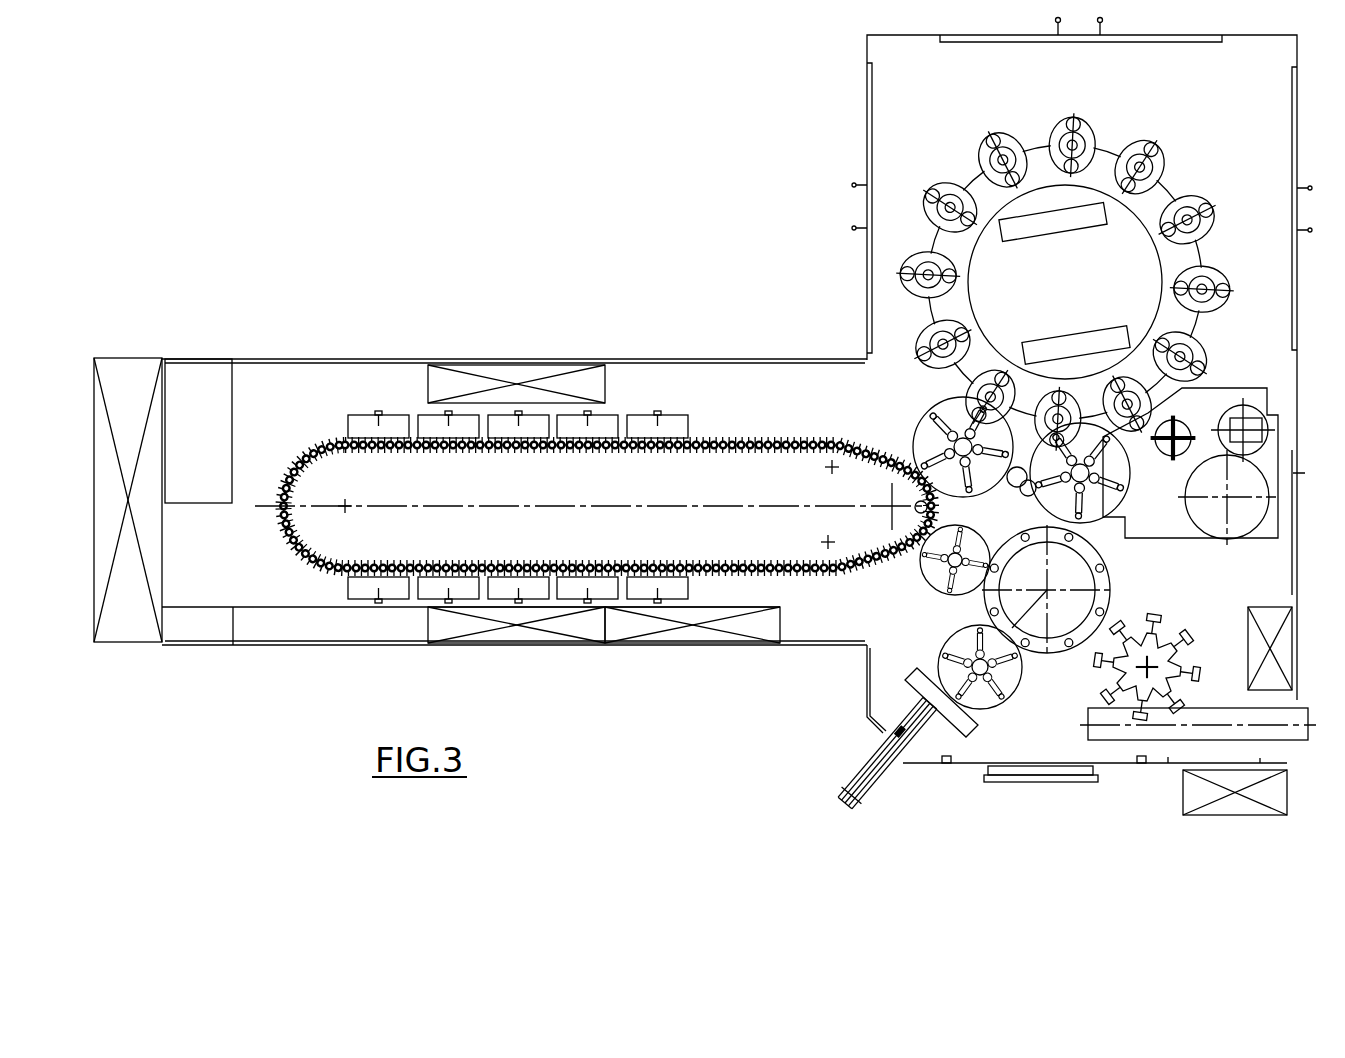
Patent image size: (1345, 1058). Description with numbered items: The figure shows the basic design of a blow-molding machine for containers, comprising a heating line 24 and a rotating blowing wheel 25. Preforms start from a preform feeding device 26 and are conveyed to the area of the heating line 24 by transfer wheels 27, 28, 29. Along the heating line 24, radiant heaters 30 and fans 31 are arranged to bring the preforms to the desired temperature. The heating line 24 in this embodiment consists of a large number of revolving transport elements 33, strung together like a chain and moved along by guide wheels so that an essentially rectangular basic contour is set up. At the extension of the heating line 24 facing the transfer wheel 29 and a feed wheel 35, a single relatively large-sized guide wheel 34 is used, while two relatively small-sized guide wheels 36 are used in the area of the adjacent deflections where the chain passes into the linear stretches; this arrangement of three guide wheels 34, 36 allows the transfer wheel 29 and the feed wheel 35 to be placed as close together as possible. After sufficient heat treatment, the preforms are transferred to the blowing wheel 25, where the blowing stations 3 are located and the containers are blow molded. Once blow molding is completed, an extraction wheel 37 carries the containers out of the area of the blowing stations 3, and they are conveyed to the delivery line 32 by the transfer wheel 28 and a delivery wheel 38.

The blowing stations 3 is at (913, 257).
The heating line 24 is at (648, 392).
The blowing wheel 25 is at (1003, 207).
The preform feeding device 26 is at (897, 770).
The transfer wheel 27 is at (997, 710).
The transfer wheel 28 is at (1053, 632).
The transfer wheel 29 is at (927, 600).
The radiant heaters 30 is at (395, 418).
The fans 31 is at (512, 375).
The delivery line 32 is at (1295, 733).
The transport elements 33 is at (315, 568).
The guide wheel 34 is at (348, 507).
The feed wheel 35 is at (945, 400).
The guide wheels 36 is at (832, 467).
The extraction wheel 37 is at (1130, 500).
The delivery wheel 38 is at (1157, 673).